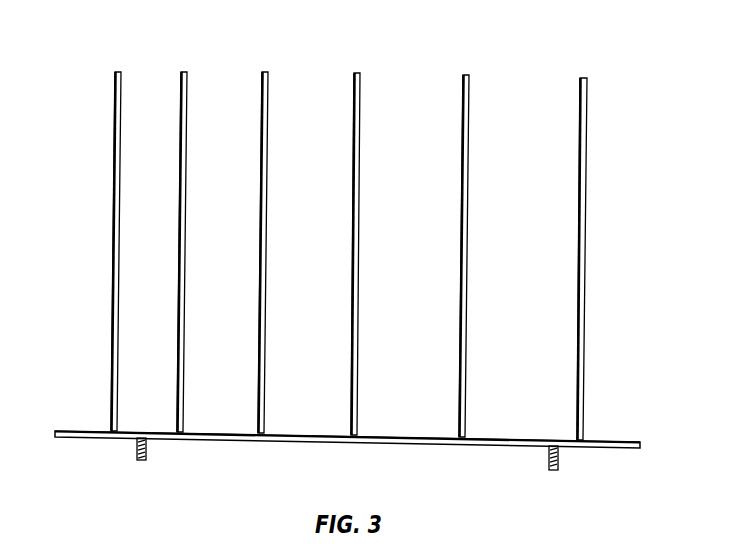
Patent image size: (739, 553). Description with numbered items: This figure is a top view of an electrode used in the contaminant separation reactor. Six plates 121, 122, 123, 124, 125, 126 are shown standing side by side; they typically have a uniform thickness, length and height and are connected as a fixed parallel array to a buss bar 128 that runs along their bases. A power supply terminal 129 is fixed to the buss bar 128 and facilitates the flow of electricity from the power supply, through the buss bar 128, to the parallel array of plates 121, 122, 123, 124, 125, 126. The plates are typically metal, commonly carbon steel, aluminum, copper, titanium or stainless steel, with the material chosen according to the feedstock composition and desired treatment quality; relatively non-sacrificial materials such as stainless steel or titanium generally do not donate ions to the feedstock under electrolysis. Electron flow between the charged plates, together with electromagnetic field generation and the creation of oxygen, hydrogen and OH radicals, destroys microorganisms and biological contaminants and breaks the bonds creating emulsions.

The plate 121 is at (86, 229).
The plate 122 is at (152, 230).
The plate 123 is at (232, 230).
The plate 124 is at (324, 232).
The plate 125 is at (433, 233).
The plate 126 is at (550, 236).
The buss bar 128 is at (347, 459).
The power supply terminal 129 is at (314, 475).